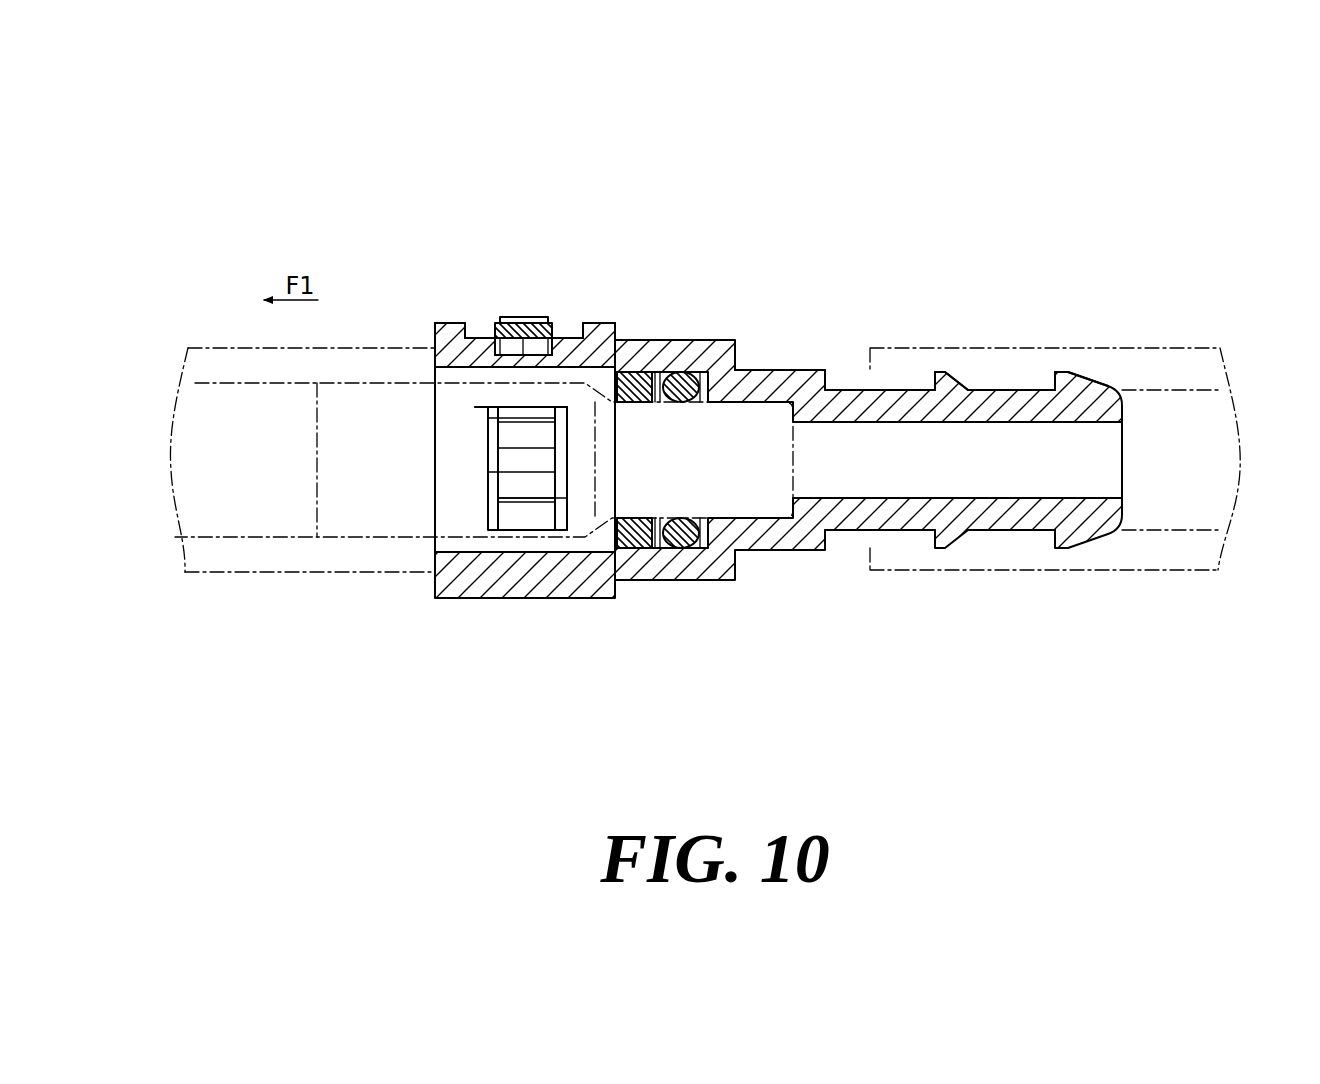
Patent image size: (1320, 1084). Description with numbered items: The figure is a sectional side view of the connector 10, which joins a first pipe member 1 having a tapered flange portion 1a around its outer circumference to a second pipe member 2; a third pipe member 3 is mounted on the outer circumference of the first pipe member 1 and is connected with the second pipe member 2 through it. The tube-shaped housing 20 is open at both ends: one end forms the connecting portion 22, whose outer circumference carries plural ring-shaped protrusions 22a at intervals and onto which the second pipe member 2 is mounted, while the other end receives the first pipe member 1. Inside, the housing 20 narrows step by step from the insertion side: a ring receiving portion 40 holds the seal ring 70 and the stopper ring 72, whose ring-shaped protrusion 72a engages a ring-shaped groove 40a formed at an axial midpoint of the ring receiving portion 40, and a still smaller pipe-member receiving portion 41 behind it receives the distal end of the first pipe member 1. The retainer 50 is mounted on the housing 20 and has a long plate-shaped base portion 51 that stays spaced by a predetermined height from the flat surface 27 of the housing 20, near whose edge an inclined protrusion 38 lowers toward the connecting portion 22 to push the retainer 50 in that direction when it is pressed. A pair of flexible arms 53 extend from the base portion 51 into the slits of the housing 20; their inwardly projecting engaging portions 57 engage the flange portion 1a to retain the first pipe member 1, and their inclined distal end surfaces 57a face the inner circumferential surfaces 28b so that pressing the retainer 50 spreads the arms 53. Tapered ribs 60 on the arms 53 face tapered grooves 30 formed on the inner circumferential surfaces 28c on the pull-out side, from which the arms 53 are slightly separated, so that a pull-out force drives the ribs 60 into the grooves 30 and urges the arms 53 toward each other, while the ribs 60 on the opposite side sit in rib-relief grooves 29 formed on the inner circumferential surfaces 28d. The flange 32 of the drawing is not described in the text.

The connector 10 is at (575, 230).
The first pipe member 1 is at (340, 540).
The flange portion 1a is at (622, 572).
The second pipe member 2 is at (1095, 572).
The third pipe member 3 is at (220, 575).
The housing 20 is at (462, 608).
The connecting portion 22 is at (860, 530).
The ring-shaped protrusion 22a is at (1087, 372).
The flat surface 27 is at (533, 322).
The inner circumferential surface 28b is at (532, 530).
The inner circumferential surface 28c is at (490, 500).
The inner circumferential surface 28d is at (585, 540).
The rib-relief groove 29 is at (598, 370).
The groove 30 is at (486, 427).
The flange 32 is at (445, 322).
The inclined protrusion 38 is at (482, 327).
The ring receiving portion 40 is at (668, 345).
The ring-shaped groove 40a is at (633, 365).
The pipe-member receiving portion 41 is at (770, 370).
The retainer 50 is at (523, 286).
The base portion 51 is at (510, 322).
The arm 53 is at (495, 407).
The engaging portion 57 is at (512, 522).
The distal end surface 57a is at (520, 522).
The rib 60 is at (486, 440).
The seal ring 70 is at (692, 372).
The stopper ring 72 is at (660, 552).
The ring-shaped protrusion 72a is at (640, 560).